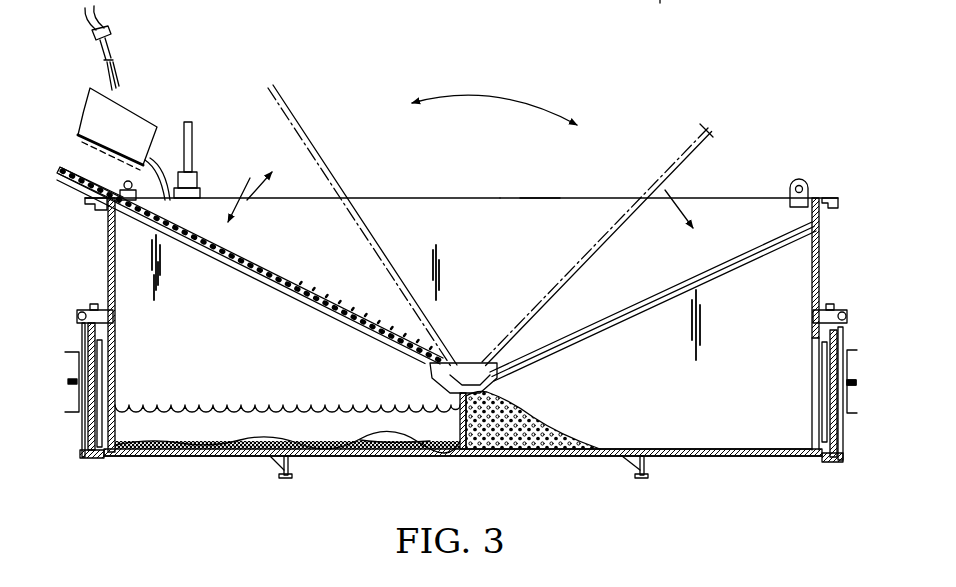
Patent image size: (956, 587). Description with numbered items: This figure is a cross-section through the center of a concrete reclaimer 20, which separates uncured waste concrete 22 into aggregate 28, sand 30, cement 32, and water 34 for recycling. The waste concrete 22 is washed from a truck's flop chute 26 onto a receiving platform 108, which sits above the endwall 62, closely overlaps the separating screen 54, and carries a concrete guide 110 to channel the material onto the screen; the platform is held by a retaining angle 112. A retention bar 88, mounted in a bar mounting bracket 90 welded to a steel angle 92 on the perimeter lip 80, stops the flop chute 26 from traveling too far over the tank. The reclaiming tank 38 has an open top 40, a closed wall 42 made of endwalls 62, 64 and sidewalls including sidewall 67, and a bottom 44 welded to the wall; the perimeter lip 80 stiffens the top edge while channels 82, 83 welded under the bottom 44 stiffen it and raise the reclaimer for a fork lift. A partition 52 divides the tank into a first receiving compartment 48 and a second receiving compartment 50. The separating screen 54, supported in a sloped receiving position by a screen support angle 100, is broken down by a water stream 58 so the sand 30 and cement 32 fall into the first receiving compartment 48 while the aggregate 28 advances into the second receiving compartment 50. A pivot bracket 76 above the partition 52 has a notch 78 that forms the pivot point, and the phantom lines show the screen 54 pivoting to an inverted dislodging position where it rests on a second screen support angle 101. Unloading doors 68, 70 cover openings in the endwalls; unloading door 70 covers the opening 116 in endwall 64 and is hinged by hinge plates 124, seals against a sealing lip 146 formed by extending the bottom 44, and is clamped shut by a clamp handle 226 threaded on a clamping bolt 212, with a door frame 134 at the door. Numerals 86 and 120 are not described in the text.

The concrete reclaimer 20 is at (210, 506).
The uncured waste concrete 22 is at (226, 246).
The flop chute 26 is at (150, 112).
The aggregate 28 is at (342, 302).
The sand 30 is at (316, 437).
The cement 32 is at (397, 436).
The water 34 is at (195, 406).
The reclaiming tank 38 is at (446, 196).
The open top 40 is at (586, 190).
The closed wall 42 is at (742, 197).
The bottom 44 is at (478, 458).
The first receiving compartment 48 is at (216, 441).
The second receiving compartment 50 is at (778, 443).
The partition 52 is at (460, 430).
The separating screen 54 is at (312, 141).
The water stream 58 is at (126, 82).
The endwall 62 is at (107, 265).
The endwall 64 is at (822, 265).
The sidewall 67 is at (540, 215).
The unloading door 68 is at (76, 453).
The unloading door 70 is at (850, 433).
The pivot bracket 76 is at (430, 376).
The notch 78 is at (492, 371).
The perimeter lip 80 is at (93, 211).
The channel 82 is at (288, 480).
The channel 83 is at (640, 478).
The pivot hinge 86 is at (805, 182).
The retention bar 88 is at (193, 142).
The bar mounting bracket 90 is at (198, 176).
The steel angle 92 is at (201, 193).
The screen support angle 100 is at (281, 296).
The screen support angle 101 is at (707, 275).
The receiving platform 108 is at (64, 196).
The concrete guide 110 is at (100, 145).
The retaining angle 112 is at (160, 230).
The opening 116 is at (658, 11).
The door seal 120 is at (847, 297).
The hinge plate 124 is at (825, 310).
The door frame 134 is at (835, 461).
The sealing lip 146 is at (822, 332).
The clamping bolt 212 is at (856, 382).
The clamp handle 226 is at (102, 348).